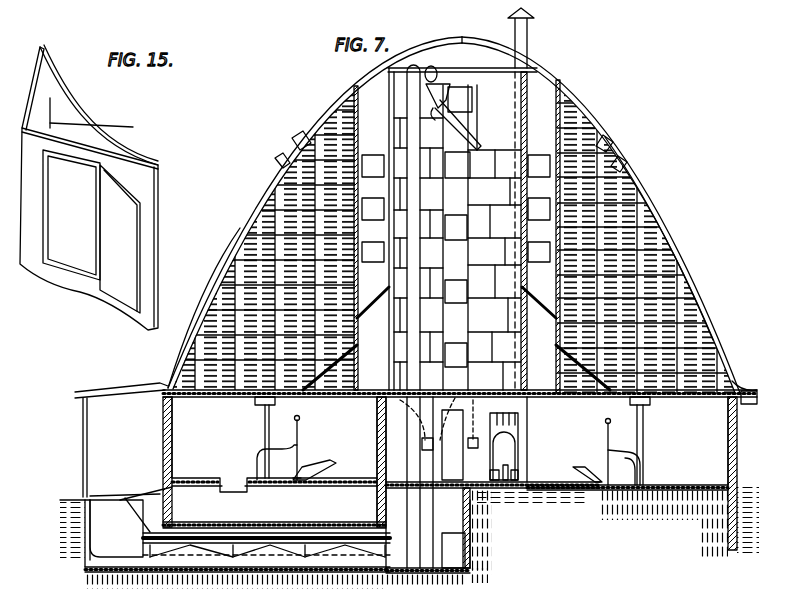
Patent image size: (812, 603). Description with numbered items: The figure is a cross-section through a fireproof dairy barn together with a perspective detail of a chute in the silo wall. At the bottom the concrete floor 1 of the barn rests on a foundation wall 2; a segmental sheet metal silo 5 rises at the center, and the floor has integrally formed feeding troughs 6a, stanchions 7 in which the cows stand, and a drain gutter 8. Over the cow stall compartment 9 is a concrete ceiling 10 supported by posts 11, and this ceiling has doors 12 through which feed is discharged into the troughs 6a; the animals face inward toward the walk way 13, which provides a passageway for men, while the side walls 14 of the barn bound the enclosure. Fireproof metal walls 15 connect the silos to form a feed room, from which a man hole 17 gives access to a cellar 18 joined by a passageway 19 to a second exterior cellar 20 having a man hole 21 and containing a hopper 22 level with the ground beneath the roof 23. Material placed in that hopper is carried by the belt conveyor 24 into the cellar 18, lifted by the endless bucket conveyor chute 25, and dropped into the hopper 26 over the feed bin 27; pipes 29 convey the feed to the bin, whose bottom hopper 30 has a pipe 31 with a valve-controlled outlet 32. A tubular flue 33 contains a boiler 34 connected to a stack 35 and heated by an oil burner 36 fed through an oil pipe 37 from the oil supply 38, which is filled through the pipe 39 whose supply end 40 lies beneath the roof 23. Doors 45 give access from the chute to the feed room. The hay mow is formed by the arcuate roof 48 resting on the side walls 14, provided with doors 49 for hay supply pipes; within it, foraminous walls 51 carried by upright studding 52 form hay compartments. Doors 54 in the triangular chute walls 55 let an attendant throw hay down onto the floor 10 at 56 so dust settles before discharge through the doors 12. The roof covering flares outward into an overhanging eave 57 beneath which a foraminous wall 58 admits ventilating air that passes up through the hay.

In FIG. 7, the floor of the barn 1 is at (712, 486).
In FIG. 7, the foundation wall 2 is at (729, 522).
In FIG. 15, the segmental sheet metal silo 5 is at (88, 112).
In FIG. 7, the segmental sheet metal silo 5 is at (528, 118).
In FIG. 7, the feeding troughs 6a is at (312, 466).
In FIG. 7, the stanchions 7 is at (260, 455).
In FIG. 7, the drain gutter 8 is at (232, 476).
In FIG. 7, the cow stall compartment 9 is at (213, 425).
In FIG. 7, the ceiling of concrete 10 is at (627, 441).
In FIG. 7, the posts 11 is at (264, 424).
In FIG. 7, the doors 12 is at (310, 400).
In FIG. 7, the walk way 13 is at (338, 466).
In FIG. 7, the side walls of the barn 14 is at (163, 416).
In FIG. 7, the fireproof metal walls 15 is at (376, 428).
In FIG. 7, the man hole 17 is at (425, 488).
In FIG. 7, the cellar 18 is at (465, 513).
In FIG. 7, the passageway 19 is at (178, 576).
In FIG. 7, the second exterior cellar 20 is at (84, 532).
In FIG. 7, the man hole 21 is at (112, 494).
In FIG. 7, the hopper 22 is at (150, 494).
In FIG. 7, the roof 23 is at (115, 390).
In FIG. 7, the belt conveyor 24 is at (248, 578).
In FIG. 7, the endless bucket conveyor chute 25 is at (430, 576).
In FIG. 7, the hopper 26 is at (437, 70).
In FIG. 7, the feed bin 27 is at (400, 98).
In FIG. 7, the pipes 29 is at (462, 127).
In FIG. 7, the hoppers 30 is at (434, 392).
In FIG. 7, the pipes 31 is at (412, 444).
In FIG. 7, the outlets 32 is at (430, 452).
In FIG. 7, the tubular flue 33 is at (556, 80).
In FIG. 7, the boiler 34 is at (519, 440).
In FIG. 7, the stack 35 is at (529, 48).
In FIG. 7, the oil burner 36 is at (526, 512).
In FIG. 7, the oil pipe 37 is at (445, 527).
In FIG. 7, the oil supply 38 is at (465, 548).
In FIG. 7, the pipe 39 is at (137, 552).
In FIG. 7, the supply end 40 is at (82, 480).
In FIG. 7, the doors 45 is at (457, 220).
In FIG. 7, the arcuate roof 48 is at (194, 296).
In FIG. 7, the doors 49 is at (298, 136).
In FIG. 7, the foraminous walls 51 is at (656, 246).
In FIG. 7, the upright studding 52 is at (651, 210).
In FIG. 15, the doors 54 is at (108, 187).
In FIG. 15, the walls 55 is at (42, 84).
In FIG. 7, the floor location for hay 56 is at (375, 312).
In FIG. 7, the overhanging spaced eave 57 is at (740, 388).
In FIG. 7, the foraminous wall 58 is at (748, 405).